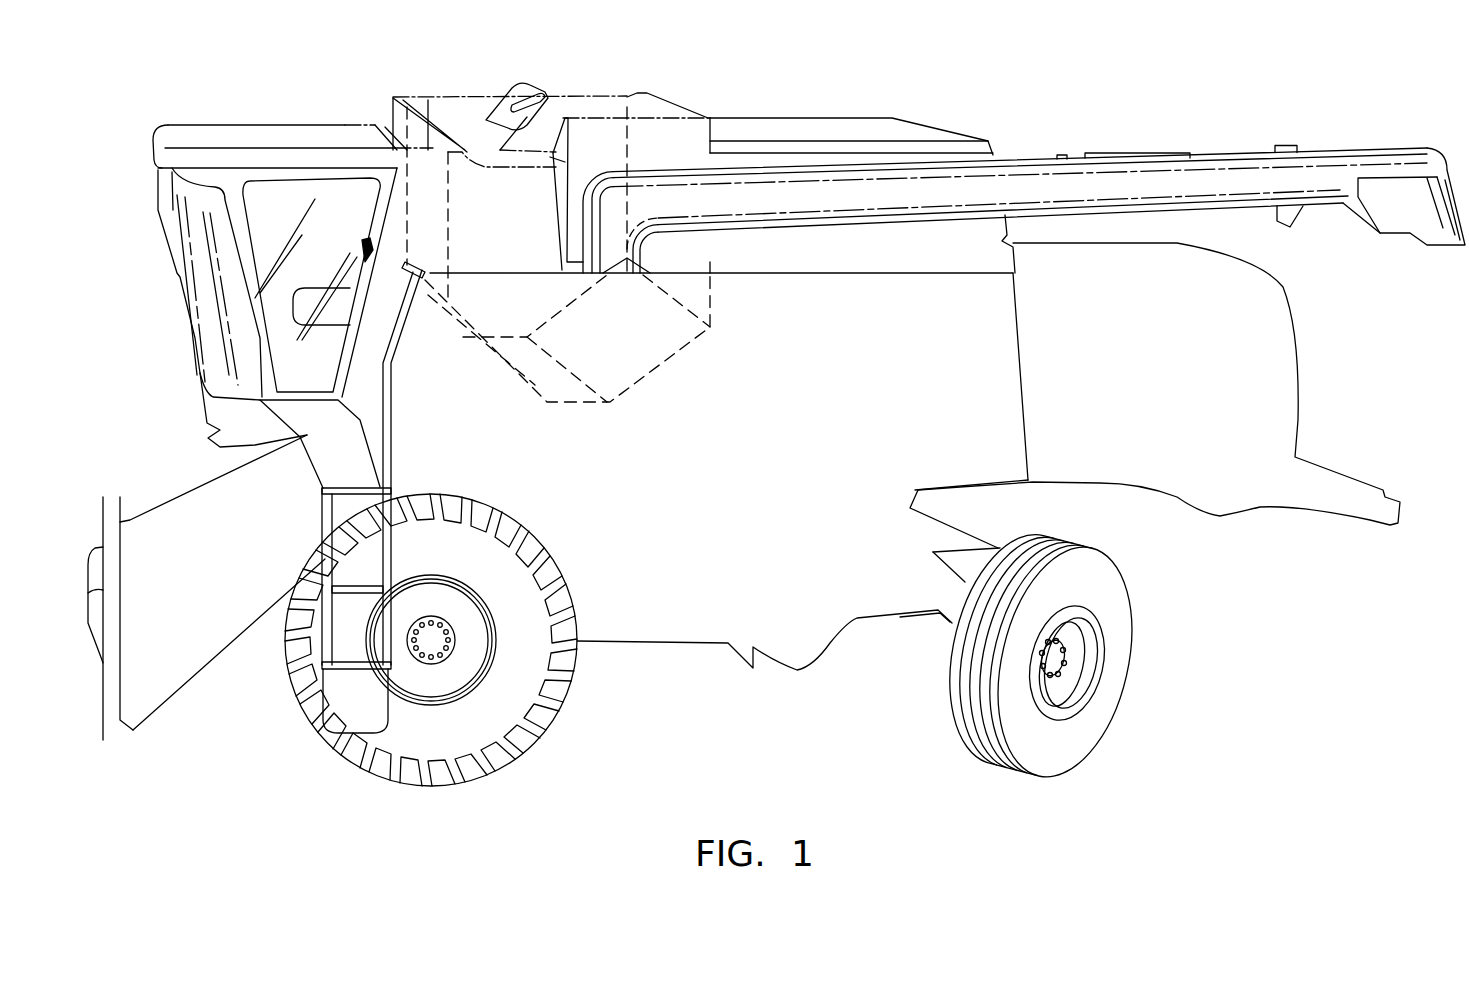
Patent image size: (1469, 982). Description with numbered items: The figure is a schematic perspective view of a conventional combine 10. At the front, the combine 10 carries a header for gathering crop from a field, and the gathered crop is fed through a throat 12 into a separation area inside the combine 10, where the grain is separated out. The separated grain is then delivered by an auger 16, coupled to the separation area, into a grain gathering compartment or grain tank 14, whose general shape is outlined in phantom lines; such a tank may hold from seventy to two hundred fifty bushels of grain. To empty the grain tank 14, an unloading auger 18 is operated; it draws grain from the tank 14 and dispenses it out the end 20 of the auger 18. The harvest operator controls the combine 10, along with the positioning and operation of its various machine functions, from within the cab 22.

The combine 10 is at (965, 112).
The throat 12 is at (170, 503).
The grain tank 14 is at (627, 107).
The auger 16 is at (505, 97).
The unloading auger 18 is at (1243, 150).
The end of the auger 20 is at (1438, 240).
The cab 22 is at (290, 192).